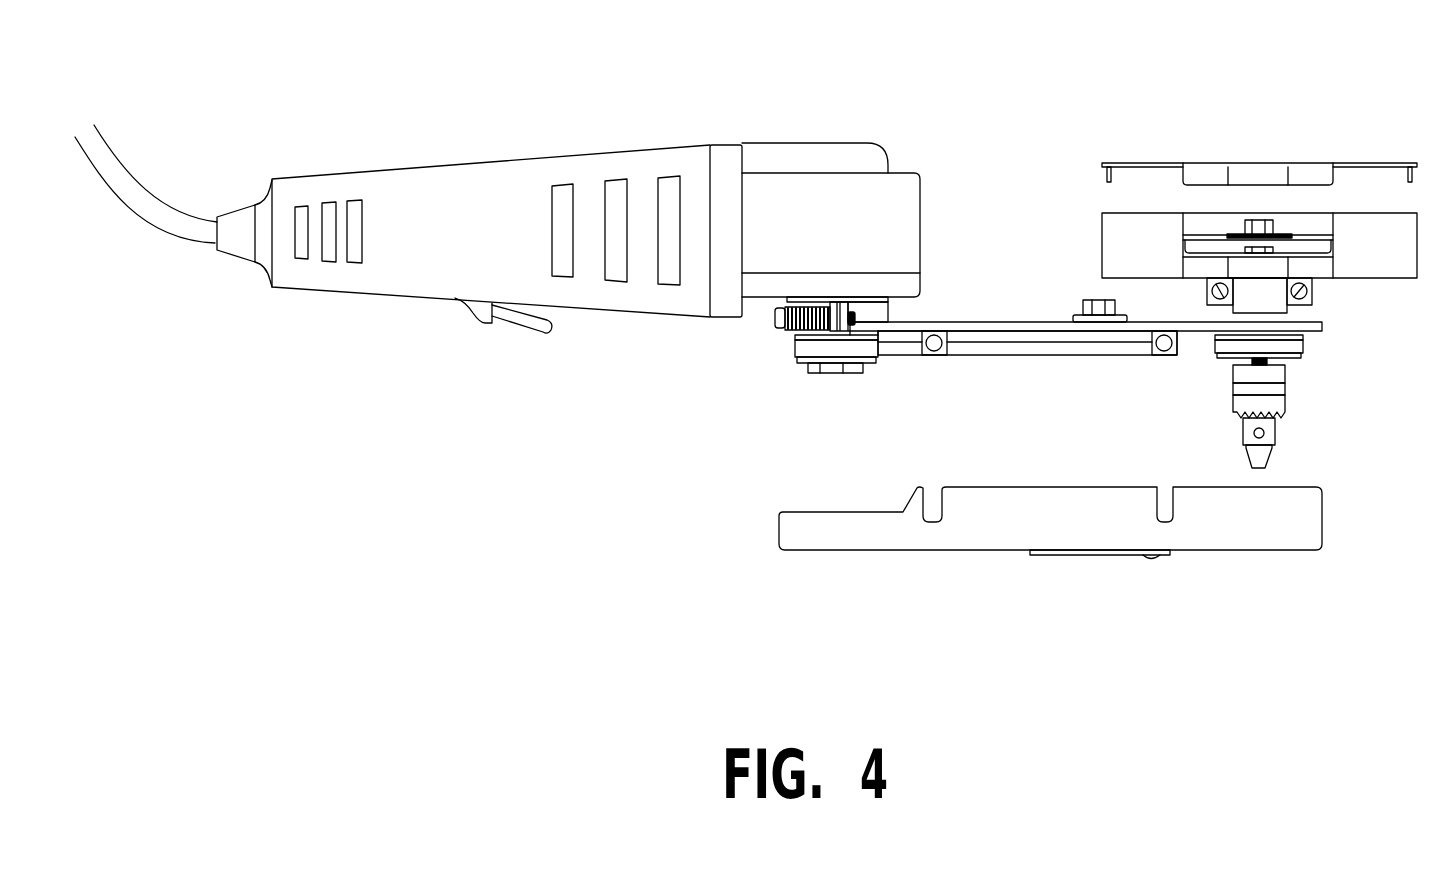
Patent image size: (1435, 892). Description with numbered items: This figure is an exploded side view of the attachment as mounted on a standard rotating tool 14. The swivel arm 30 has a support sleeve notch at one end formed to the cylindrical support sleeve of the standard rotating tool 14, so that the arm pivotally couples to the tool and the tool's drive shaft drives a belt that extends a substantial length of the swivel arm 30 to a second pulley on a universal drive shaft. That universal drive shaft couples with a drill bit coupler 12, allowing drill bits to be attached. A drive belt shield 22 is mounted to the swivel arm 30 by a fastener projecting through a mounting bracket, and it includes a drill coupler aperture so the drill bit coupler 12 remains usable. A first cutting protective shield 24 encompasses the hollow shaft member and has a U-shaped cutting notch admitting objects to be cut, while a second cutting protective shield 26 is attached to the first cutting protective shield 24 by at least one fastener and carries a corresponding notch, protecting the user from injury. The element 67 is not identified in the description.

The standard rotating tool 14 is at (767, 143).
The second cutting protective shield 26 is at (1143, 163).
The first cutting protective shield 24 is at (1357, 278).
The swivel arm 30 is at (1018, 322).
The drill bit coupler 12 is at (1233, 402).
The drive belt shield 22 is at (978, 550).
The bottom tab 67 is at (1098, 555).